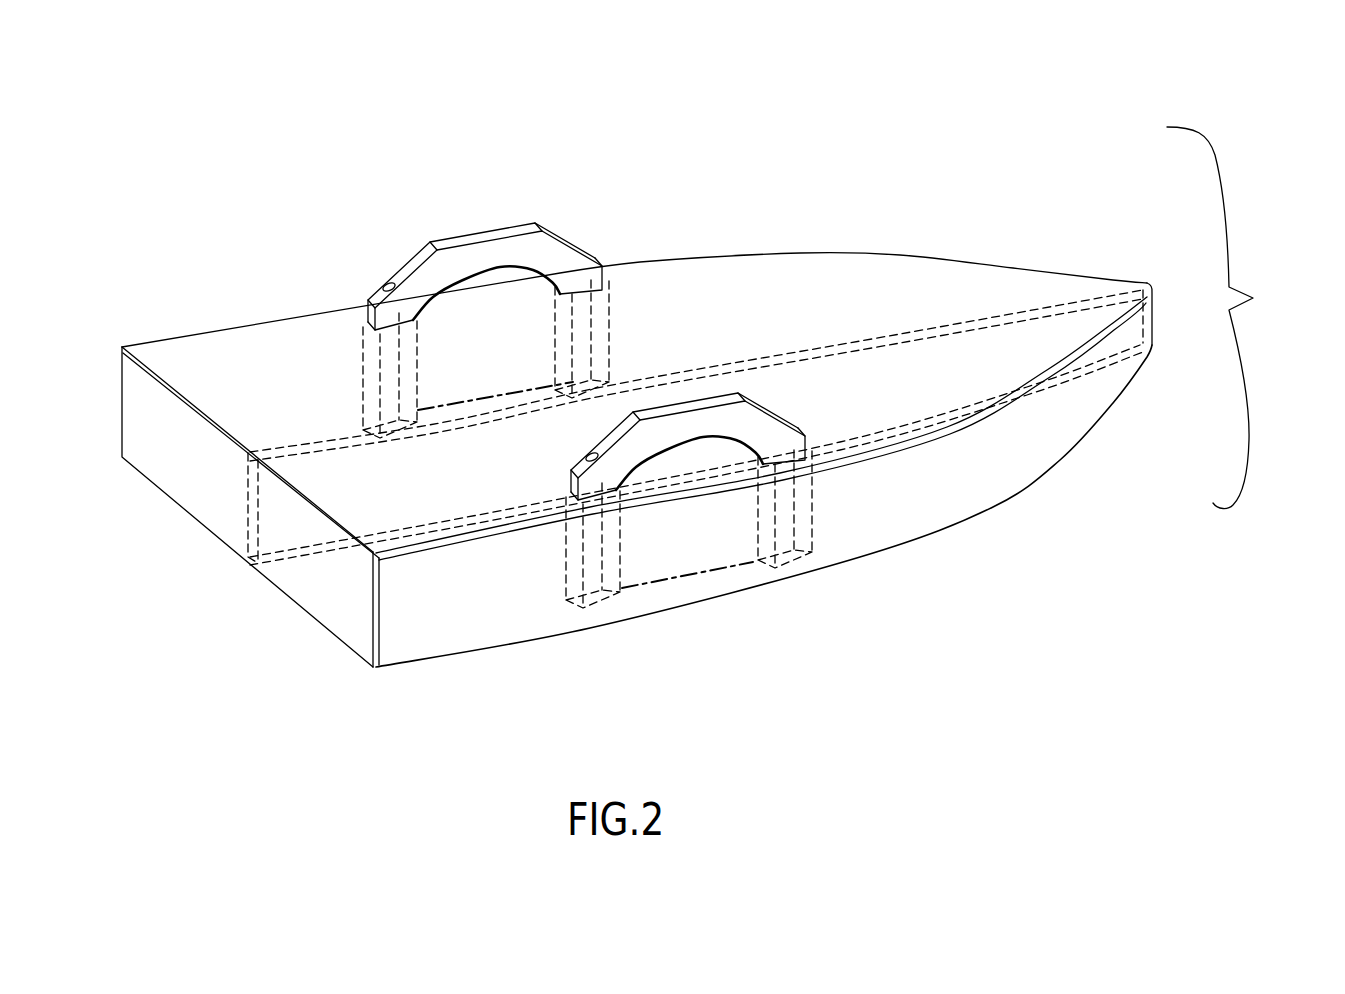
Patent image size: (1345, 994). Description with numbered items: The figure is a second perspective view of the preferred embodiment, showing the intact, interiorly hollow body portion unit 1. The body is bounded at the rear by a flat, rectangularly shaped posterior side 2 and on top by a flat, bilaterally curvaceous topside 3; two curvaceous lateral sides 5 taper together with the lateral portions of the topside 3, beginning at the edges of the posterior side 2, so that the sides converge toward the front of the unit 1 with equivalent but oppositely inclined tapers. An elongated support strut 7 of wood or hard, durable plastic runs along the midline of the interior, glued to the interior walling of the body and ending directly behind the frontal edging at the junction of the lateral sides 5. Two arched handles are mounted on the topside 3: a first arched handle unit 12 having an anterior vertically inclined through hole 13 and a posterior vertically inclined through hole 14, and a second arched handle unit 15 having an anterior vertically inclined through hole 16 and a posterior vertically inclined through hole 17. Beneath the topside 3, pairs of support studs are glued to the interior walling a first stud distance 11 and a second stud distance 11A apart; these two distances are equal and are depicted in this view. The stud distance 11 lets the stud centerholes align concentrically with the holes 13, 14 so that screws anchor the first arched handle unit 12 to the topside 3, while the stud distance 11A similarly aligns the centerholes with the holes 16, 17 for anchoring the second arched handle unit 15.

The body portion unit 1 is at (1265, 298).
The posterior side 2 is at (175, 465).
The topside 3 is at (296, 362).
The lateral sides 5 is at (948, 479).
The elongated support strut 7 is at (284, 503).
The first stud distance 11 is at (700, 575).
The second stud distance 11A is at (493, 393).
The first arched handle unit 12 is at (488, 243).
The anterior vertically inclined through hole 13 is at (583, 253).
The posterior vertically inclined through hole 14 is at (384, 283).
The second arched handle unit 15 is at (695, 422).
The anterior vertically inclined through hole 16 is at (778, 412).
The posterior vertically inclined through hole 17 is at (598, 450).